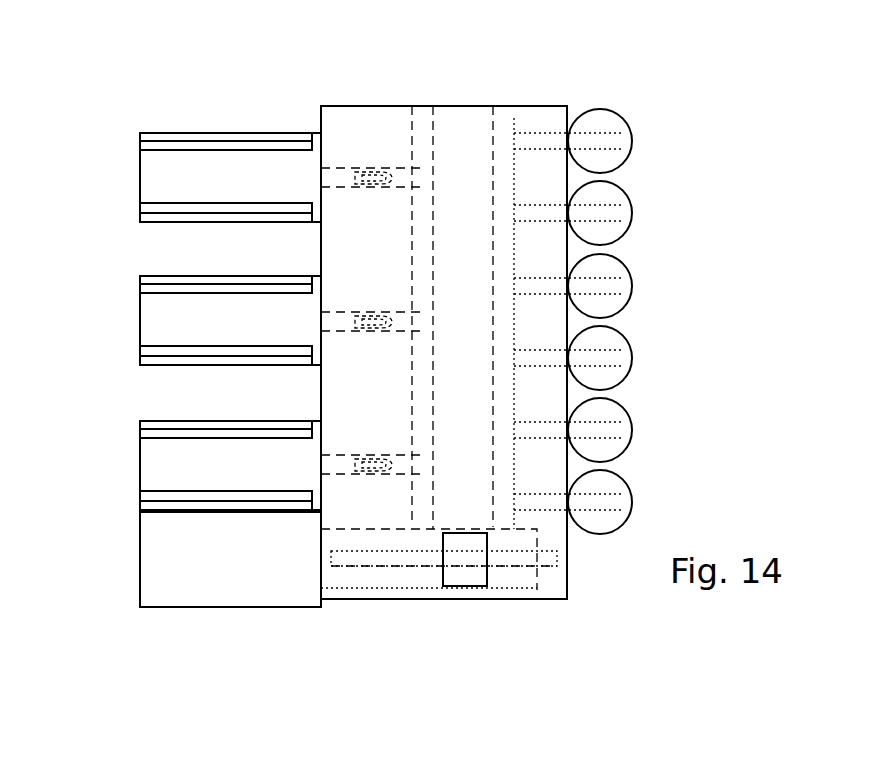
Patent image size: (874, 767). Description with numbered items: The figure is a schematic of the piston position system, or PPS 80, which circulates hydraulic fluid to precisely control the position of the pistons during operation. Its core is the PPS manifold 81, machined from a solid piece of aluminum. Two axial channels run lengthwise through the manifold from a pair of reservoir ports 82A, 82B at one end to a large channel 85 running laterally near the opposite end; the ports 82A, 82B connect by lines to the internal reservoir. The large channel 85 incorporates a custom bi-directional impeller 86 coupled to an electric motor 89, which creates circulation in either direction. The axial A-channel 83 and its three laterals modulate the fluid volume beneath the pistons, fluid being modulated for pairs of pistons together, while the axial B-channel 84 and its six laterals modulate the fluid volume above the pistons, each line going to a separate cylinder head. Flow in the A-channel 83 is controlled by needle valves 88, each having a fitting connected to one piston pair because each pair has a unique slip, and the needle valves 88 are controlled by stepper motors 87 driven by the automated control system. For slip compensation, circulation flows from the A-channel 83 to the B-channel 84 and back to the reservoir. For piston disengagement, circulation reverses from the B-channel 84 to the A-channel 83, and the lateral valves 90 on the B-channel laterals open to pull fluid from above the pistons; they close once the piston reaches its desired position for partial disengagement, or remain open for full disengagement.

The piston position system 80 is at (158, 626).
The PPS manifold 81 is at (328, 562).
The reservoir port 82A is at (423, 104).
The reservoir port 82B is at (512, 104).
The A-channel 83 is at (432, 222).
The B-channel 84 is at (506, 378).
The large channel 85 is at (378, 581).
The bi-directional impeller 86 is at (474, 578).
The stepper motor 87 is at (180, 141).
The needle valve 88 is at (372, 170).
The electric motor 89 is at (139, 558).
The lateral valve 90 is at (632, 140).